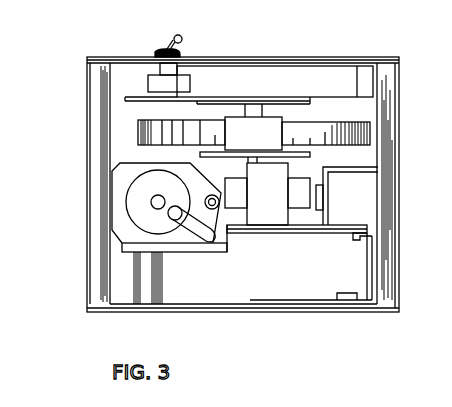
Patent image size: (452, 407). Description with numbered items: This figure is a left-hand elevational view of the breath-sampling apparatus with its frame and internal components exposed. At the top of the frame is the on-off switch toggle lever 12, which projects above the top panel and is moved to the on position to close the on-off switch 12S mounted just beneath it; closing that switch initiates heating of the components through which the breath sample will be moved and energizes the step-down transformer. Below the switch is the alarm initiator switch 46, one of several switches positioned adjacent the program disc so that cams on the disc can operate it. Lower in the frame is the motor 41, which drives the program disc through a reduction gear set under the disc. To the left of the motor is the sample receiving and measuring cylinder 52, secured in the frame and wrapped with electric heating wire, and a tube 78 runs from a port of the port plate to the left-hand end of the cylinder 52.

The on-off switch toggle lever 12 is at (172, 42).
The on-off switch 12S is at (147, 80).
The alarm initiator switch 46 is at (268, 128).
The sample receiving and measuring cylinder 52 is at (125, 173).
The tube 78 is at (219, 248).
The motor 41 is at (272, 212).